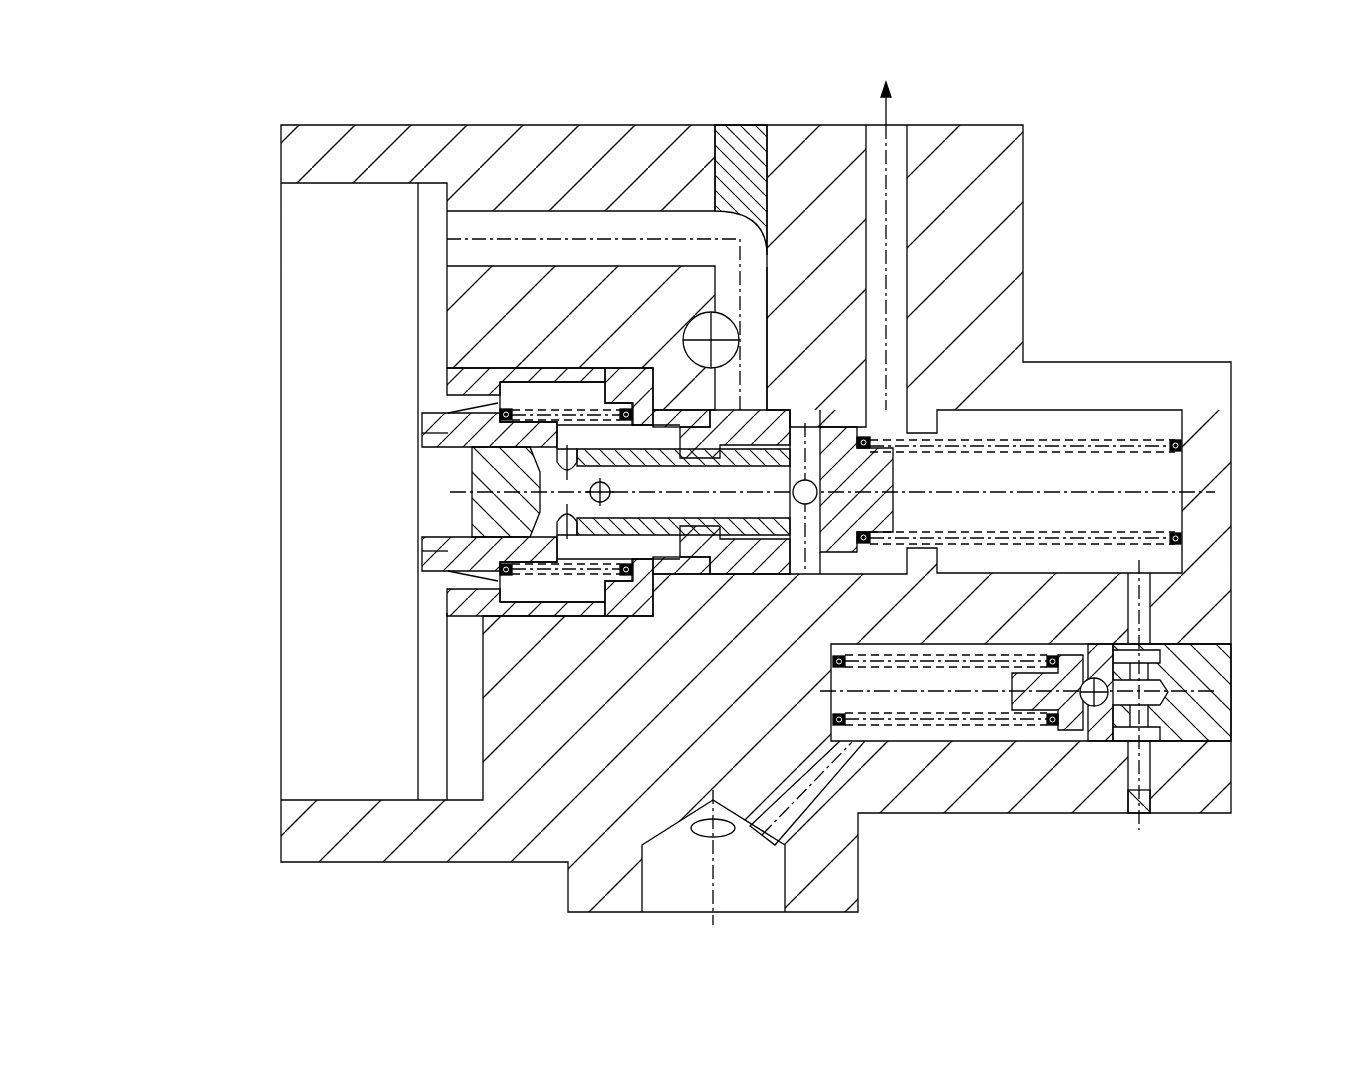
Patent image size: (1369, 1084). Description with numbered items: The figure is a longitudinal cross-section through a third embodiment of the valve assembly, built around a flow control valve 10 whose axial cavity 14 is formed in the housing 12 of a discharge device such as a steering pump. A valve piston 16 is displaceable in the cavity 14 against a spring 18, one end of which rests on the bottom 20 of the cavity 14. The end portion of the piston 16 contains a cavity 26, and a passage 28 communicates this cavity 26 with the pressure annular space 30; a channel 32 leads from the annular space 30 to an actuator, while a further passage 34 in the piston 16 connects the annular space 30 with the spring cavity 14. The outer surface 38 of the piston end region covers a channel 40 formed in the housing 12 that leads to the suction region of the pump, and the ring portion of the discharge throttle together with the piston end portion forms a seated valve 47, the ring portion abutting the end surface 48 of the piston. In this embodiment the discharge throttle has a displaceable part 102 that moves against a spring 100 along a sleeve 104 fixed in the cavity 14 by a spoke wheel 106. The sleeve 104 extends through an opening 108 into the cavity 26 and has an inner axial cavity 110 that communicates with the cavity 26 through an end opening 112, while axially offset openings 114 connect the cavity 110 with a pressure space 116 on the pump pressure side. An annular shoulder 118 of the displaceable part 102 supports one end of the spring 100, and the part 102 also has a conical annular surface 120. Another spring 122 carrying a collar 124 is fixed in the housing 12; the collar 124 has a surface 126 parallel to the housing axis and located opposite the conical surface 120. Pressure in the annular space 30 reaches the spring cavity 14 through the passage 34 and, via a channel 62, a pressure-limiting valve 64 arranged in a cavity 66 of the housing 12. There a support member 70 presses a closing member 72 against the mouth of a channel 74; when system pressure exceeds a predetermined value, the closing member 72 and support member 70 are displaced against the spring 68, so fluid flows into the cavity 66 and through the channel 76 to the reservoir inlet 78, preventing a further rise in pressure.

The flow control valve 10 is at (1184, 265).
The housing 12 is at (1200, 393).
The axial cavity 14 is at (1155, 492).
The valve piston 16 is at (877, 472).
The spring 18 is at (1182, 444).
The bottom 20 is at (1185, 520).
The cavity 26 is at (760, 547).
The passage 28 is at (800, 506).
The pressure annular space 30 is at (855, 420).
The channel 32 is at (892, 180).
The passage 34 is at (887, 560).
The outer surface 38 is at (775, 392).
The channel 40 is at (545, 230).
The seated valve 47 is at (707, 422).
The end surface 48 is at (673, 415).
The channel 62 is at (1150, 610).
The pressure-limiting valve 64 is at (1200, 718).
The cavity 66 is at (955, 742).
The spring 68 is at (1050, 736).
The support member 70 is at (1075, 735).
The closing member 72 is at (1097, 710).
The channel 74 is at (1168, 736).
The channel 76 is at (848, 770).
The inlet of the reservoir 78 is at (731, 897).
The spring 100 is at (505, 410).
The displaceable part 102 is at (422, 441).
The sleeve 104 is at (495, 510).
The spoke wheel 106 is at (665, 545).
The opening 108 is at (705, 537).
The inner axial cavity 110 is at (625, 537).
The end opening 112 is at (815, 557).
The openings 114 is at (580, 580).
The pressure space 116 is at (545, 590).
The annular shoulder 118 is at (422, 568).
The conical annular surface 120 is at (448, 579).
The spring 122 is at (565, 381).
The collar 124 is at (450, 383).
The surface 126 is at (448, 405).